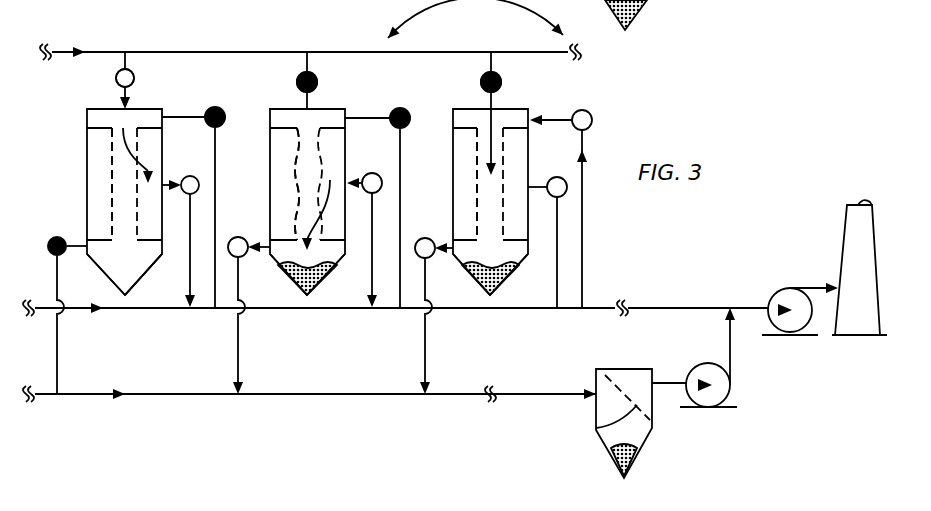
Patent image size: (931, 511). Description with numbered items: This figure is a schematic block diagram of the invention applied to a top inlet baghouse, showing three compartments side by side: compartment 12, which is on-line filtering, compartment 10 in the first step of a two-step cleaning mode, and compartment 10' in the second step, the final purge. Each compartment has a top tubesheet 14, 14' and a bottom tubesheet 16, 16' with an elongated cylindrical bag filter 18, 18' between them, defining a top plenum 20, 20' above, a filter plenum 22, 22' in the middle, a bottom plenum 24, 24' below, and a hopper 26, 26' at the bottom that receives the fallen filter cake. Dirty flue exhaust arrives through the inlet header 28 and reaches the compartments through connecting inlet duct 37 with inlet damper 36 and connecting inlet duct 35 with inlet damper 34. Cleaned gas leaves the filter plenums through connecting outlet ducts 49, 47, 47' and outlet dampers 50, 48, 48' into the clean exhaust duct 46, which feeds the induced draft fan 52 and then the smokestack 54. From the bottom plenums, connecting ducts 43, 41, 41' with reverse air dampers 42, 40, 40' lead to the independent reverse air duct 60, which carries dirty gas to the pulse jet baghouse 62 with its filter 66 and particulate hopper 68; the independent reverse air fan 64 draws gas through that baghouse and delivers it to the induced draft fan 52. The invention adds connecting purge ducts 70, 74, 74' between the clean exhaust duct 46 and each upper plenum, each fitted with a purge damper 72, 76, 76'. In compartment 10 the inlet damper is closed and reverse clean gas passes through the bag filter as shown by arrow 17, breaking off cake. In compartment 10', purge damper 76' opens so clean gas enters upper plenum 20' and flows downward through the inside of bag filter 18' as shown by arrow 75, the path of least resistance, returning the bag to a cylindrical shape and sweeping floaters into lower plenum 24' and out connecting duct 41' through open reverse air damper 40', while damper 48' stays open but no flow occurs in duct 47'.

The compartment 10 is at (318, 190).
The compartment 10' is at (499, 190).
The compartment 12 is at (137, 109).
The top tubesheet 14 is at (216, 96).
The top tubesheet 14' is at (473, 122).
The bottom tubesheet 16 is at (191, 211).
The bottom tubesheet 16' is at (473, 210).
The arrow 17 is at (303, 222).
The bag filter 18 is at (162, 184).
The bag filter 18' is at (445, 184).
The top plenum 20 is at (214, 102).
The upper plenum 20' is at (546, 109).
The filter plenum 22 is at (173, 184).
The filter plenum 22' is at (458, 184).
The bottom plenum 24 is at (218, 275).
The lower plenum 24' is at (484, 275).
The hopper 26 is at (241, 280).
The hopper 26' is at (500, 284).
The inlet header 28 is at (437, 54).
The inlet damper 34 is at (296, 81).
The connecting inlet duct 35 is at (315, 72).
The inlet damper 36 is at (116, 78).
The connecting inlet duct 37 is at (133, 64).
The reverse air damper 40 is at (232, 267).
The reverse air damper 40' is at (431, 233).
The connecting duct 41 is at (239, 325).
The connecting duct 41' is at (405, 326).
The reverse air damper 42 is at (63, 236).
The connecting duct 43 is at (56, 300).
The clean exhaust duct 46 is at (118, 312).
The connecting outlet duct 47 is at (355, 250).
The connecting outlet duct 47' is at (537, 252).
The outlet damper 48 is at (366, 171).
The outlet damper 48' is at (577, 192).
The connecting outlet duct 49 is at (185, 216).
The outlet damper 50 is at (206, 166).
The induced draft fan 52 is at (773, 300).
The smokestack 54 is at (840, 223).
The independent reverse air duct 60 is at (285, 396).
The pulse jet baghouse 62 is at (616, 369).
The independent reverse air fan 64 is at (692, 373).
The filter 66 is at (596, 432).
The particulate hopper 68 is at (612, 462).
The connecting purge duct 70 is at (176, 118).
The purge damper 72 is at (236, 108).
The connecting purge duct 74 is at (367, 134).
The connecting purge duct 74' is at (596, 132).
The arrow 75 is at (493, 147).
The purge damper 76 is at (413, 195).
The purge damper 76' is at (587, 198).